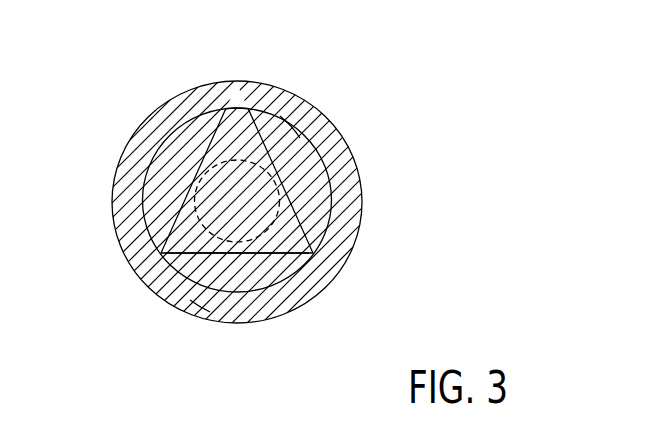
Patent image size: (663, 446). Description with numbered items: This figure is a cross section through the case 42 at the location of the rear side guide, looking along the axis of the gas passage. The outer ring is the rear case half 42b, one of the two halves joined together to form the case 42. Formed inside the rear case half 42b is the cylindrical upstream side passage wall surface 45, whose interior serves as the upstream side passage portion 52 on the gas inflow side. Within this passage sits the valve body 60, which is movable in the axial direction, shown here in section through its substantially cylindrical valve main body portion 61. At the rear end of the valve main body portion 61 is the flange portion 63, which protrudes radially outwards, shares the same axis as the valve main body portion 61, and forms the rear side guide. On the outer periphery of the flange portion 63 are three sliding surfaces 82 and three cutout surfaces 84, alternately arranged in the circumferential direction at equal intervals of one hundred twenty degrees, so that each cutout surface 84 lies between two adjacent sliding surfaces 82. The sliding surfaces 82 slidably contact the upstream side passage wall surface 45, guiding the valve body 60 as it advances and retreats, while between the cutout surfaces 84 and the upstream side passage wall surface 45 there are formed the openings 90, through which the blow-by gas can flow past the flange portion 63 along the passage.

The case 42 is at (325, 99).
The rear case half 42b is at (337, 162).
The upstream side passage wall surface 45 is at (150, 172).
The upstream side passage portion 52 is at (150, 203).
The valve body 60 is at (310, 202).
The valve main body portion 61 is at (210, 160).
The flange portion 63 is at (274, 258).
The sliding surfaces 82 is at (237, 108).
The cutout surfaces 84 is at (280, 116).
The openings 90 is at (180, 151).